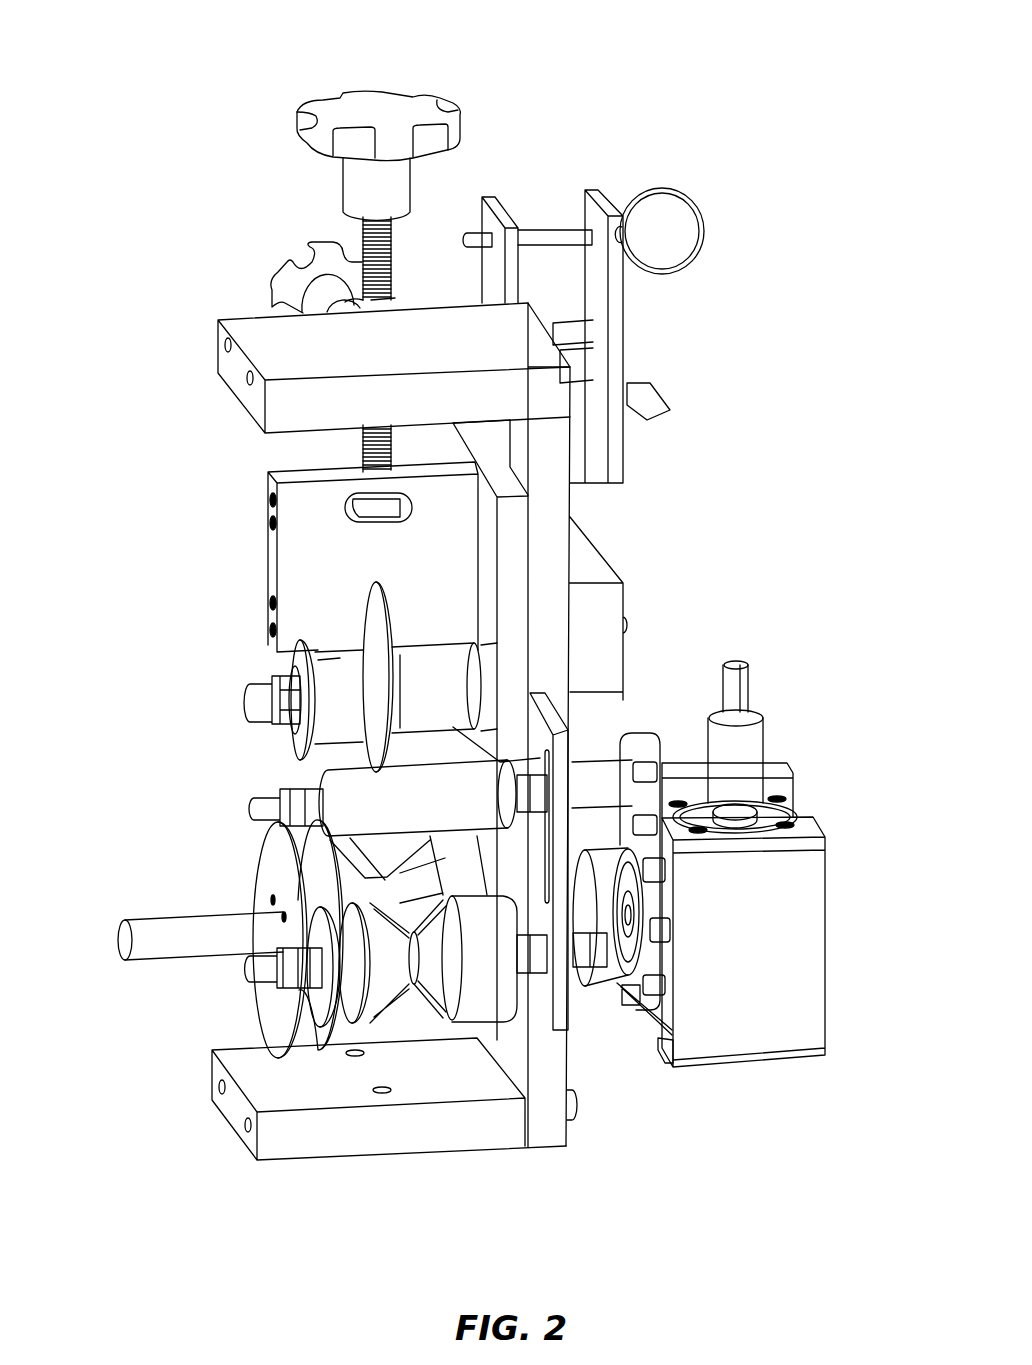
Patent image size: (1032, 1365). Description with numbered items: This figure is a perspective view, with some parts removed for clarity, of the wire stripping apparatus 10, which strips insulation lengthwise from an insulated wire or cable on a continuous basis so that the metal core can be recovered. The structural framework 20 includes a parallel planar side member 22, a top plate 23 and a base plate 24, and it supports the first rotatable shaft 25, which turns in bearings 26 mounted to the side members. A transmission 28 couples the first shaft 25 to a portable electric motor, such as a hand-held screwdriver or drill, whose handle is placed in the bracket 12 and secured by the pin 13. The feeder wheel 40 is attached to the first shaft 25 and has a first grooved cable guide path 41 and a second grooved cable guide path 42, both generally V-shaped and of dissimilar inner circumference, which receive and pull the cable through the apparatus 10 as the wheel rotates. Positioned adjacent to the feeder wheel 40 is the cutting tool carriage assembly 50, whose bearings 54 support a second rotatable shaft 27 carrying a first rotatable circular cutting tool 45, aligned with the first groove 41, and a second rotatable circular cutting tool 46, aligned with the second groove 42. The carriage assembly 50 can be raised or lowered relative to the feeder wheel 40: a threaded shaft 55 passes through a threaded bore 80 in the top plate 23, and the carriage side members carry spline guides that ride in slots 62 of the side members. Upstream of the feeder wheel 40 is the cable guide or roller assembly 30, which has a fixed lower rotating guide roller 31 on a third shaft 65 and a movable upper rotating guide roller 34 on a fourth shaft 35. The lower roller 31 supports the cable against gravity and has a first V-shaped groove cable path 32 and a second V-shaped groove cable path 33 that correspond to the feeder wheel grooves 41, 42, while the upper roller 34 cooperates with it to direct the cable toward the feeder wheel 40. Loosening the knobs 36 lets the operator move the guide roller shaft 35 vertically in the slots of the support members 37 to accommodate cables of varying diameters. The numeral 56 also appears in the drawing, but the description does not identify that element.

The wire stripping apparatus 10 is at (573, 100).
The bracket 12 is at (595, 192).
The pin 13 is at (697, 207).
The supporting frame structure 20 is at (687, 476).
The second side member 22 is at (550, 550).
The top plate 23 is at (258, 337).
The base plate 24 is at (470, 1133).
The first shaft 25 is at (124, 940).
The bearing 26 is at (597, 990).
The second shaft 27 is at (477, 677).
The transmission 28 is at (820, 840).
The cable guide 30 is at (585, 1047).
The lower rotating guide roller 31 is at (322, 1008).
The first V-shaped groove cable path 32 is at (407, 1002).
The second V-shaped groove cable path 33 is at (347, 1000).
The upper rotating guide roller 34 is at (357, 792).
The fourth shaft 35 is at (292, 806).
The loosening knobs 36 is at (637, 733).
The support members 37 is at (553, 717).
The feeder wheel 40 is at (278, 1008).
The first grooved cable guide path 41 is at (370, 895).
The second grooved cable guide path 42 is at (337, 858).
The first rotatable circular cutting tool 45 is at (370, 650).
The second rotatable circular cutting tool 46 is at (296, 665).
The cutting tool carriage assembly 50 is at (253, 510).
The bearings 54 is at (472, 650).
The threaded shaft 55 is at (363, 243).
The knob 56 is at (298, 106).
The slots 62 is at (507, 450).
The third shaft 65 is at (268, 989).
The thread bore 80 is at (387, 342).